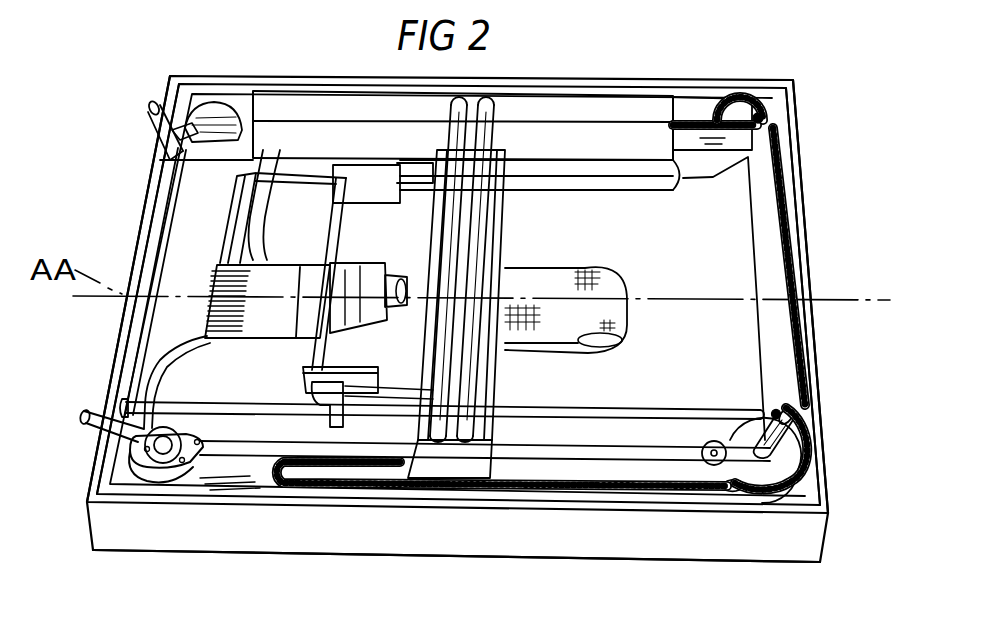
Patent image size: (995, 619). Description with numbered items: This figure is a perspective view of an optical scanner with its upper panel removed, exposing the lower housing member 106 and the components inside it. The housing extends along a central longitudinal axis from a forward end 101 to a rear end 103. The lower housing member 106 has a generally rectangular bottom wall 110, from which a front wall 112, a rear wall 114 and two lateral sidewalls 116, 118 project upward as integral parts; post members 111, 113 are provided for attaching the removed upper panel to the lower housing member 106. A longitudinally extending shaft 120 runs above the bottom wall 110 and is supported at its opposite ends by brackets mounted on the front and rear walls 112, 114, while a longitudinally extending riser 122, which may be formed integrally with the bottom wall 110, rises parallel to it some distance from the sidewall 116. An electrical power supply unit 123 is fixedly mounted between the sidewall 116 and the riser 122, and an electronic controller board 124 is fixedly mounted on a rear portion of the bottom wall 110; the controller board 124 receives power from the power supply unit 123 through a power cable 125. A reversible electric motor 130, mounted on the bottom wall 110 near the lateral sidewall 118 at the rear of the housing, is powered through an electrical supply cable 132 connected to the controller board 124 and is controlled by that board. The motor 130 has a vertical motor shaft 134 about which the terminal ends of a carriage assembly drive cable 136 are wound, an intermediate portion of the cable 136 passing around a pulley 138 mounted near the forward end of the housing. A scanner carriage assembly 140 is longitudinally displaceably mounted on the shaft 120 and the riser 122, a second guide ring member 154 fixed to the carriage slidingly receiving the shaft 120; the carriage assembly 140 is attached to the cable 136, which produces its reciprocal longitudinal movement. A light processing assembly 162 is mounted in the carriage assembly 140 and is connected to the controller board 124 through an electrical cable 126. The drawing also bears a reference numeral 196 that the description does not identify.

The forward end 101 is at (818, 338).
The rear end 103 is at (120, 322).
The lower housing member 106 is at (802, 183).
The bottom wall 110 is at (678, 287).
The post member 111 is at (762, 116).
The front wall 112 is at (810, 215).
The post member 113 is at (790, 410).
The rear wall 114 is at (140, 260).
The lateral sidewall 116 is at (238, 78).
The lateral sidewall 118 is at (315, 542).
The longitudinally extending shaft 120 is at (650, 410).
The longitudinally extending riser 122 is at (268, 185).
The electrical power supply unit 123 is at (643, 110).
The electronic controller board 124 is at (255, 300).
The power cable 125 is at (267, 203).
The electrical cable 126 is at (613, 268).
The reversible electric motor 130 is at (160, 477).
The electrical supply cable 132 is at (160, 362).
The vertical motor shaft 134 is at (145, 432).
The carriage assembly drive cable 136 is at (233, 440).
The pulley 138 is at (703, 467).
The scanner carriage assembly 140 is at (524, 234).
The second guide ring member 154 is at (312, 400).
The light processing assembly 162 is at (360, 265).
The connector tube 196 is at (790, 452).